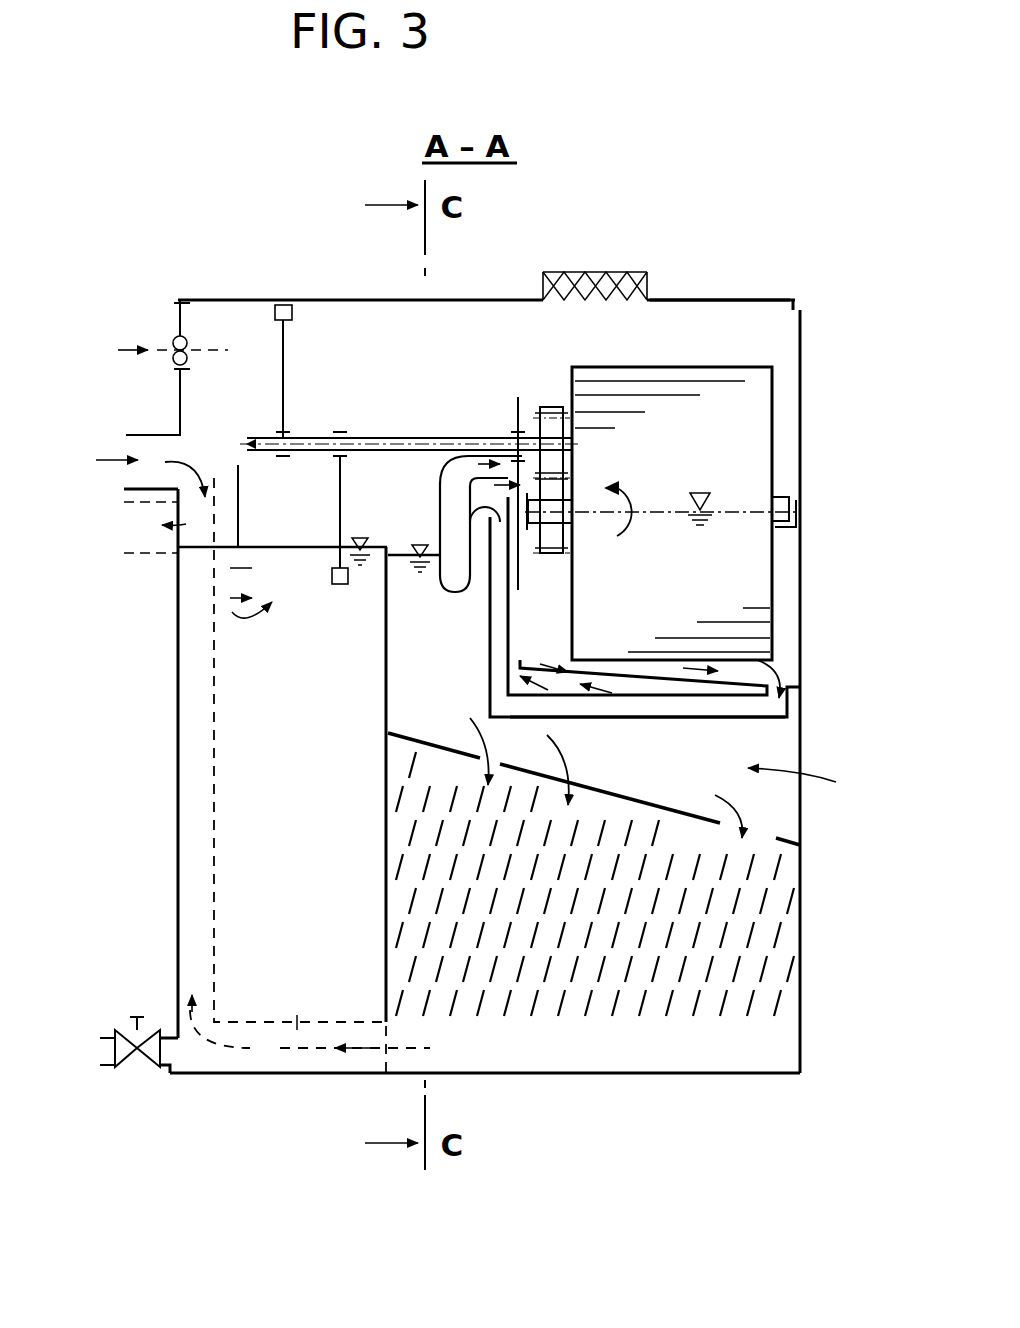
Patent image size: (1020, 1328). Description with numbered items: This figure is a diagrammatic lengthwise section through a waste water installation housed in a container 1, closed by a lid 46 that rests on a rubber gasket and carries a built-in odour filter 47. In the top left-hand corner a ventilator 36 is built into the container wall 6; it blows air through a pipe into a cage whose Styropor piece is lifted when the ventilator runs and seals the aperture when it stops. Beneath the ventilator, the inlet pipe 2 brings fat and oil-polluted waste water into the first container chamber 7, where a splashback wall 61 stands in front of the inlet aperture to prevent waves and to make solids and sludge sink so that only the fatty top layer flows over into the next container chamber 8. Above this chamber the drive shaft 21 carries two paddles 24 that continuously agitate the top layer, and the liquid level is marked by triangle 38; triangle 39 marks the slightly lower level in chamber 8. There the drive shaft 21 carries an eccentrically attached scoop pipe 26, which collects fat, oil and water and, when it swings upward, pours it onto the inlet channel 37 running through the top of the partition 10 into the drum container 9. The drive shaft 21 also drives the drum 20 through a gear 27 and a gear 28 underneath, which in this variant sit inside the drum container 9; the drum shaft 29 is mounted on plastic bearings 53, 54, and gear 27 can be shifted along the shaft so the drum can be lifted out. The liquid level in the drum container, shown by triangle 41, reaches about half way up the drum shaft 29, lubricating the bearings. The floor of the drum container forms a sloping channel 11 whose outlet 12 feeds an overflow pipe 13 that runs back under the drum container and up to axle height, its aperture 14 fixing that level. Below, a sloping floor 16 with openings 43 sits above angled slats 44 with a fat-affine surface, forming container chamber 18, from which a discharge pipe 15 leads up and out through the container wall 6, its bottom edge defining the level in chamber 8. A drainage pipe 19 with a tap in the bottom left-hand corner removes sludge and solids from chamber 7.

The container 1 is at (800, 420).
The inlet pipe 2 is at (145, 488).
The container wall 6 is at (178, 626).
The first container chamber 7 is at (243, 885).
The next container chamber 8 is at (799, 784).
The drum container 9 is at (790, 392).
The partition of drum container 10 is at (500, 642).
The sloping channel 11 is at (665, 680).
The outlet 12 is at (780, 667).
The overflow pipe 13 is at (733, 712).
The aperture of overflow pipe 14 is at (510, 500).
The discharge pipe 15 is at (150, 552).
The sloping floor 16 is at (845, 816).
The container chamber 18 is at (724, 975).
The drainage pipe 19 is at (165, 1070).
The drum 20 is at (746, 367).
The drive shaft 21 is at (325, 440).
The paddles 24 is at (283, 305).
The scoop pipe 26 is at (450, 588).
The gear 27 is at (553, 415).
The gear 28 is at (556, 555).
The drum shaft 29 is at (782, 497).
The ventilator 36 is at (176, 340).
The inlet channel 37 is at (490, 500).
The triangle 38 is at (360, 538).
The triangle 39 is at (420, 545).
The triangle 41 is at (700, 492).
The openings 43 is at (445, 730).
The slats 44 is at (740, 932).
The lid 46 is at (705, 298).
The odour filter 47 is at (616, 280).
The plastic bearing 53 is at (790, 527).
The plastic bearing 54 is at (545, 550).
The splashback wall 61 is at (240, 517).